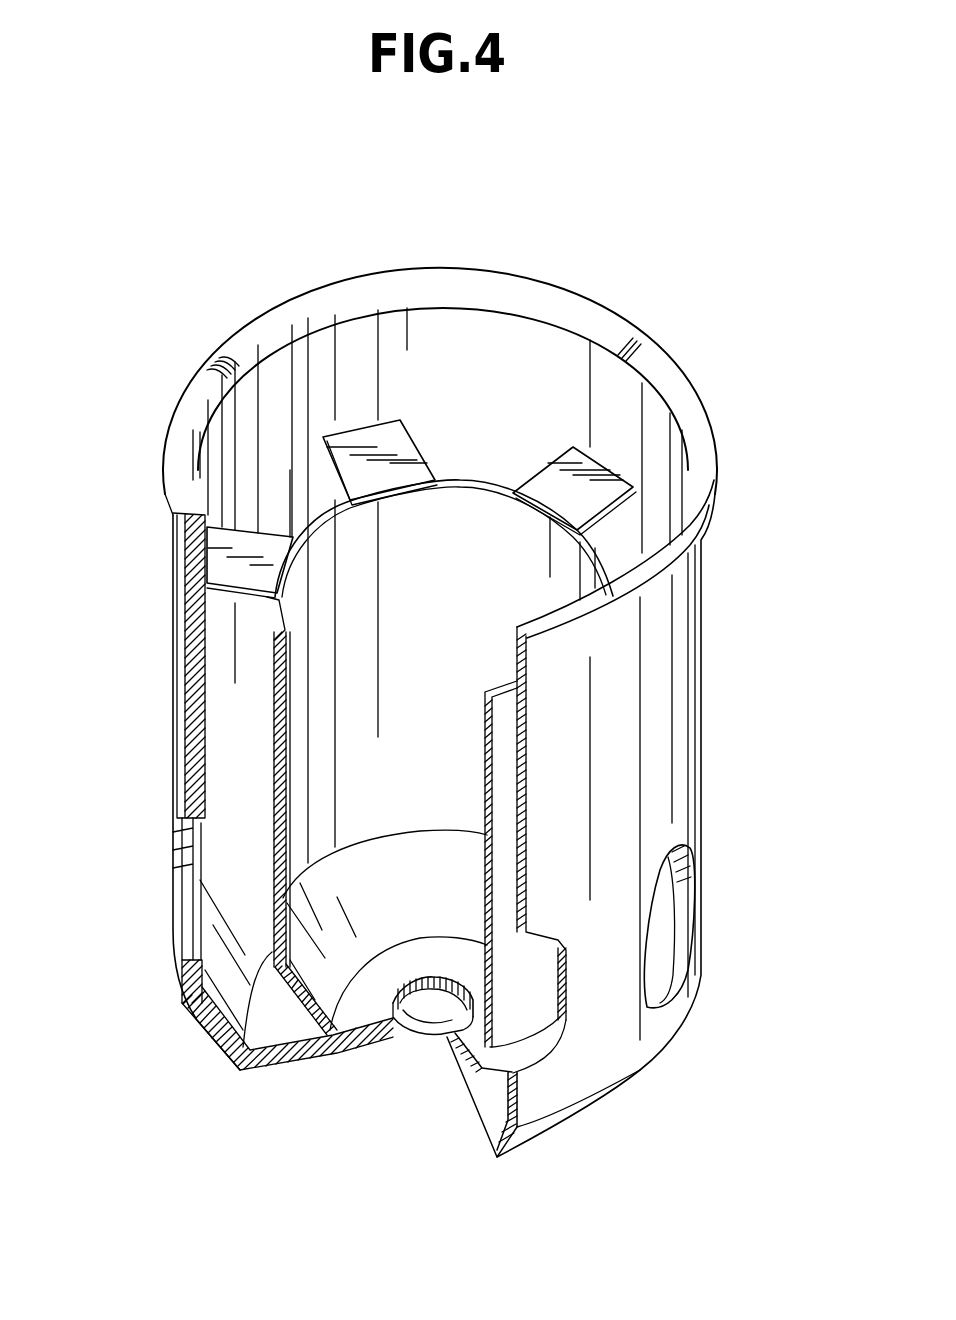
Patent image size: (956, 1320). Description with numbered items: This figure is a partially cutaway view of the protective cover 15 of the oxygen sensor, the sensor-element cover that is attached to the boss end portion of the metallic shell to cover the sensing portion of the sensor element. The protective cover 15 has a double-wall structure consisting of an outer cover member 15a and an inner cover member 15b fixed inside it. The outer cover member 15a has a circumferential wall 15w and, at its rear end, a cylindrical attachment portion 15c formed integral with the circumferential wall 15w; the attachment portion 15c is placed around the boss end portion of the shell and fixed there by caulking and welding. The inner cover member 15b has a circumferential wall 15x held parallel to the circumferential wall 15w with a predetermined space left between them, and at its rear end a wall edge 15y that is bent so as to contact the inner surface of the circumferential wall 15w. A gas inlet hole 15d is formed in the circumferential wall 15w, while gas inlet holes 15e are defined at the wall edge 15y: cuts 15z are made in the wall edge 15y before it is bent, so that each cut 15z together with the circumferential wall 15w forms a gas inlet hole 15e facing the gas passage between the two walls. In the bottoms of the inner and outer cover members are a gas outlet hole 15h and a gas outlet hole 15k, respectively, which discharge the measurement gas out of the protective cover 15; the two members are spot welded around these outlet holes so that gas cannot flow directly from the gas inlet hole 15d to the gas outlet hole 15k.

The protective cover 15 is at (666, 291).
The outer cover member 15a is at (657, 722).
The inner cover member 15b is at (267, 878).
The cylindrical attachment portion 15c is at (480, 370).
The gas inlet hole 15d is at (680, 942).
The gas inlet hole 15e is at (303, 503).
The gas outlet hole 15h is at (457, 1003).
The gas outlet hole 15k is at (433, 990).
The circumferential wall 15w is at (182, 697).
The circumferential wall 15x is at (267, 790).
The wall edge 15y is at (367, 437).
The cut 15z is at (413, 433).